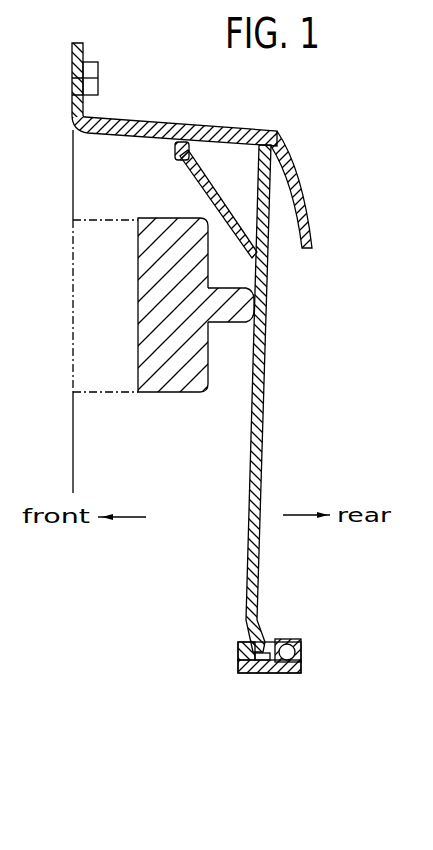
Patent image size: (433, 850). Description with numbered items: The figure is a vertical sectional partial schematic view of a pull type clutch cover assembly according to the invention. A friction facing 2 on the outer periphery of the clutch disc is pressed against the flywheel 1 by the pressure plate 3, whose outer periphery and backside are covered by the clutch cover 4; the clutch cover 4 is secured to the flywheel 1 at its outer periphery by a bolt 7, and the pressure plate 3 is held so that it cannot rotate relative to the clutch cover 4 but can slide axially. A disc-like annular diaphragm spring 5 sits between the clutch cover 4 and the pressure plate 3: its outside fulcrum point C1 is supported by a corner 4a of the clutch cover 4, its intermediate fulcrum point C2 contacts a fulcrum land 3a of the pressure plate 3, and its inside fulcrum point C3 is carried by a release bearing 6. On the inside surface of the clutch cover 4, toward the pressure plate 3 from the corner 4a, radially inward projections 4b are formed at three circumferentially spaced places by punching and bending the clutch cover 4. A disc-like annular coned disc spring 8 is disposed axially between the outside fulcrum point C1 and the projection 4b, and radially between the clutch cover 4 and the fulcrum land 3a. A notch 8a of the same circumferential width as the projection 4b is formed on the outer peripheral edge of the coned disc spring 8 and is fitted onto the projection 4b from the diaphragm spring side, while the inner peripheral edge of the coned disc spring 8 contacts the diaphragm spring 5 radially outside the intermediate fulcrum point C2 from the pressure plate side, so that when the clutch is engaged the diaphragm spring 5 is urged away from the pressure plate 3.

The flywheel 1 is at (60, 190).
The friction facing 2 is at (78, 394).
The pressure plate 3 is at (172, 380).
The fulcrum land 3a is at (238, 310).
The clutch cover 4 is at (220, 119).
The corner 4a is at (284, 130).
The projection 4b is at (175, 152).
The diaphragm spring 5 is at (270, 362).
The release bearing 6 is at (236, 650).
The bolt 7 is at (94, 78).
The coned disc spring 8 is at (204, 184).
The notch 8a is at (193, 148).
The outside fulcrum point C1 is at (276, 152).
The intermediate fulcrum point C2 is at (265, 300).
The inside fulcrum point C3 is at (266, 640).